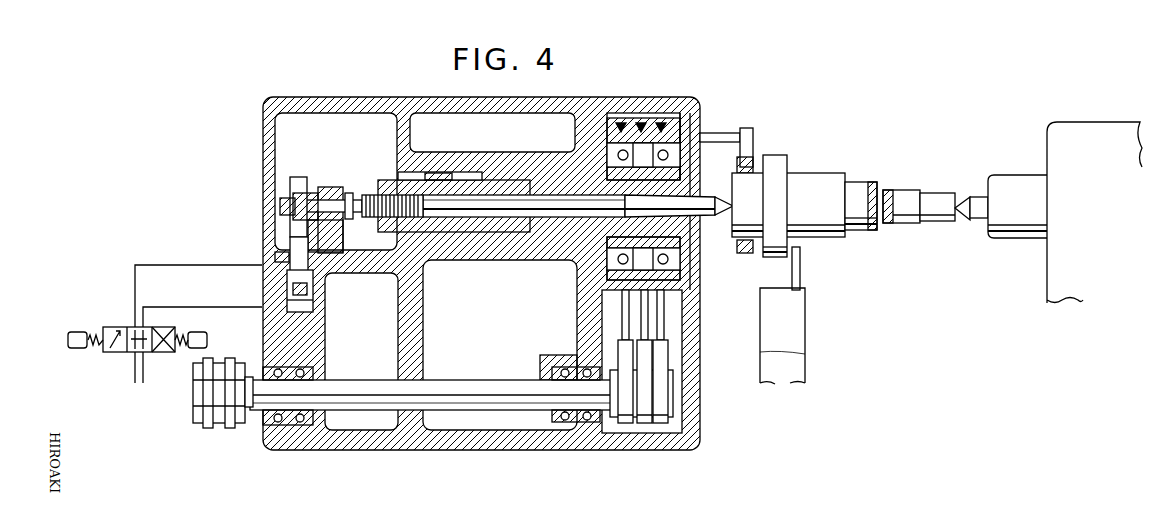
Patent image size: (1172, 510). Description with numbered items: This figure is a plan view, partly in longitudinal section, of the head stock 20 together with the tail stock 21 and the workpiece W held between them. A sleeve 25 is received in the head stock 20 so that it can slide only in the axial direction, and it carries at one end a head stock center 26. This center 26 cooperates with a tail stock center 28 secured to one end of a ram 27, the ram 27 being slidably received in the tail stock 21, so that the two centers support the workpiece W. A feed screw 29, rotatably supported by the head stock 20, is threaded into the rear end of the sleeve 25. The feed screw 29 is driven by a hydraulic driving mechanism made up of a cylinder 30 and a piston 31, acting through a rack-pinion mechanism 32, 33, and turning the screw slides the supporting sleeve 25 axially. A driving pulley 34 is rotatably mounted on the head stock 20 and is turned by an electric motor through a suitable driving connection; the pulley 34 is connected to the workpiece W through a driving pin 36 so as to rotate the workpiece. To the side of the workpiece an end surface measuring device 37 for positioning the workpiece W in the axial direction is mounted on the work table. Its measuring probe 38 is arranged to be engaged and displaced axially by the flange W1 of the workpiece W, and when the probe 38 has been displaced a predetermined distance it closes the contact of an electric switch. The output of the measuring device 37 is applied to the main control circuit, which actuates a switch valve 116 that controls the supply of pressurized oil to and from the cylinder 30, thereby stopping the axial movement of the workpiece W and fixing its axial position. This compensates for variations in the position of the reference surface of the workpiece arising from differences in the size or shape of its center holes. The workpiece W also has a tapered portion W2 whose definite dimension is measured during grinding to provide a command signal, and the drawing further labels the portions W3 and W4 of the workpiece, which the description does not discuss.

The head stock 20 is at (582, 108).
The tail stock 21 is at (1093, 135).
The sleeve 25 is at (512, 225).
The head stock center 26 is at (709, 220).
The ram 27 is at (1013, 185).
The tail stock center 28 is at (975, 218).
The feed screw 29 is at (372, 195).
The cylinder 30 is at (306, 305).
The piston 31 is at (282, 283).
The rack 32 is at (283, 254).
The pinion 33 is at (294, 178).
The driving pulley 34 is at (650, 130).
The driving pin 36 is at (724, 134).
The end surface measuring device 37 is at (795, 373).
The measuring probe 38 is at (800, 268).
The switch valve 116 is at (123, 327).
The workpiece W is at (806, 190).
The flange W1 is at (774, 165).
The tapered portion W2 is at (902, 197).
The workpiece journal W3 is at (826, 232).
The workpiece shoulder W4 is at (876, 232).